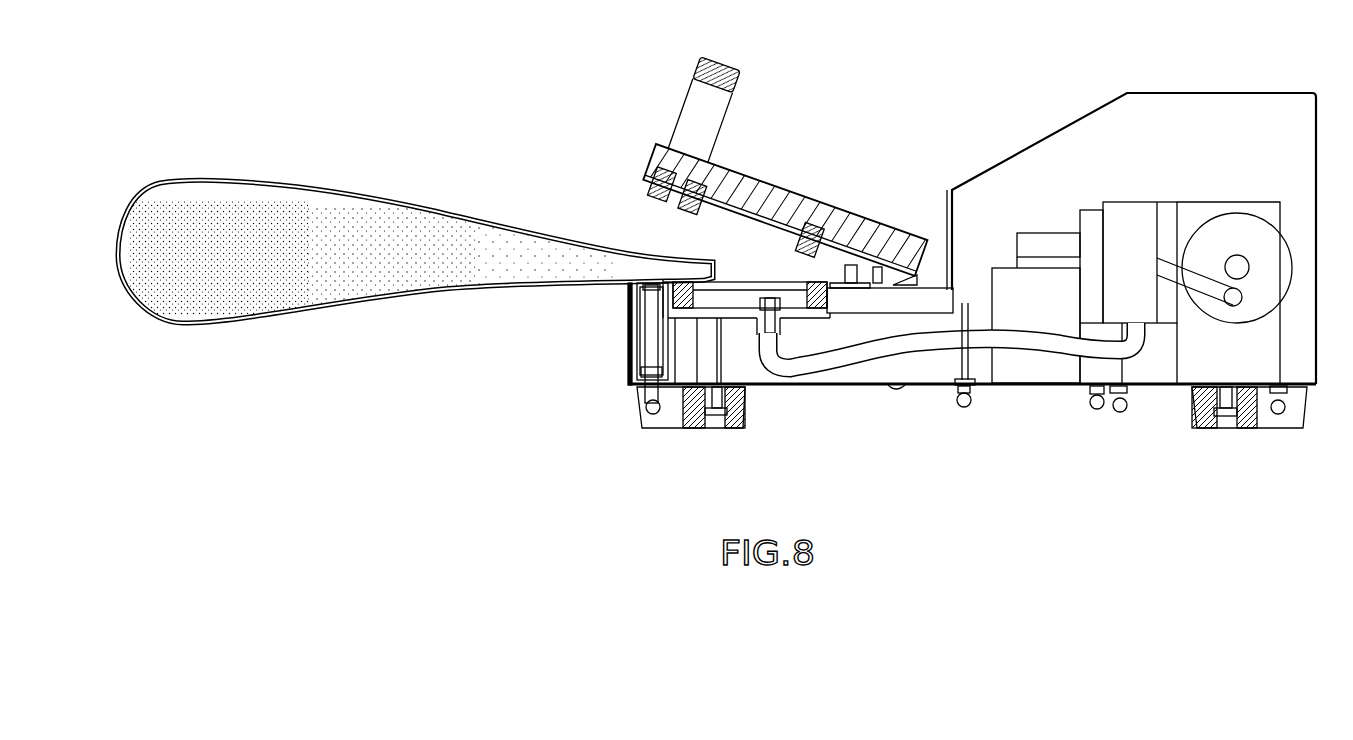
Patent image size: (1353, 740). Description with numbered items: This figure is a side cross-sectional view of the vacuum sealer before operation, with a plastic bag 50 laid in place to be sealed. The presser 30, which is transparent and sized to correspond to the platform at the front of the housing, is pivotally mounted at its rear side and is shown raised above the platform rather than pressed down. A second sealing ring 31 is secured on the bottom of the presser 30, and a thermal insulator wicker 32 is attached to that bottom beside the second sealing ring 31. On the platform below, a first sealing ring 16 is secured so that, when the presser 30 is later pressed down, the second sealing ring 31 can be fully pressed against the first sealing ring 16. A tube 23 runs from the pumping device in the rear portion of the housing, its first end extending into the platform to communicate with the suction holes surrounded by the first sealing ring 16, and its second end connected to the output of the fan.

The plastic bag 50 is at (308, 188).
The presser 30 is at (782, 190).
The second sealing ring 31 is at (830, 223).
The thermal insulator wicker 32 is at (660, 174).
The first sealing ring 16 is at (818, 308).
The tube 23 is at (907, 347).